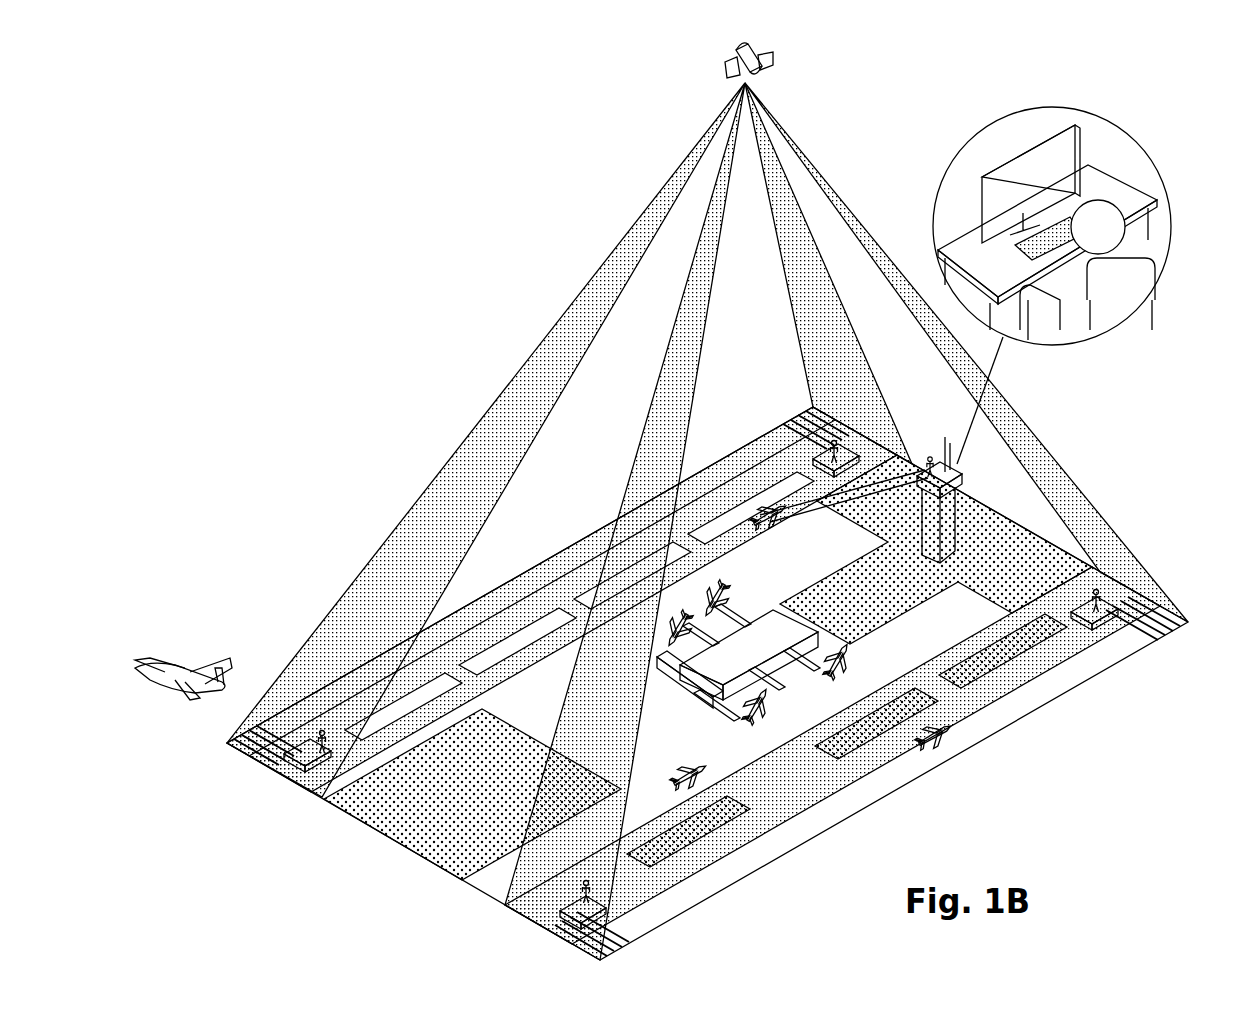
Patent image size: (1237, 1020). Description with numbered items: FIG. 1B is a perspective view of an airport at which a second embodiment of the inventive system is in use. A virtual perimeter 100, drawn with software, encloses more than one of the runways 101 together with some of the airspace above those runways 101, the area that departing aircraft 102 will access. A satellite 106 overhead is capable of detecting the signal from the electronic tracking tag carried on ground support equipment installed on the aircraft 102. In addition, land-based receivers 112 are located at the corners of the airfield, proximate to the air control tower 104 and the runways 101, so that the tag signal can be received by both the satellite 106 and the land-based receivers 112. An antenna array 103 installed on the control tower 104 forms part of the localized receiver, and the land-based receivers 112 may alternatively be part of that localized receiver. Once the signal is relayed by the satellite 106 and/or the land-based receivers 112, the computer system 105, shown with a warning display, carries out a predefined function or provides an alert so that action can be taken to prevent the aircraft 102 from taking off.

The virtual perimeter 100 is at (460, 487).
The runways 101 is at (855, 800).
The aircraft 102 is at (169, 662).
The antenna array 103 is at (932, 458).
The aircraft control tower 104 is at (950, 512).
The computer system 105 is at (1068, 157).
The satellite 106 is at (723, 68).
The land-based receivers 112 is at (830, 438).